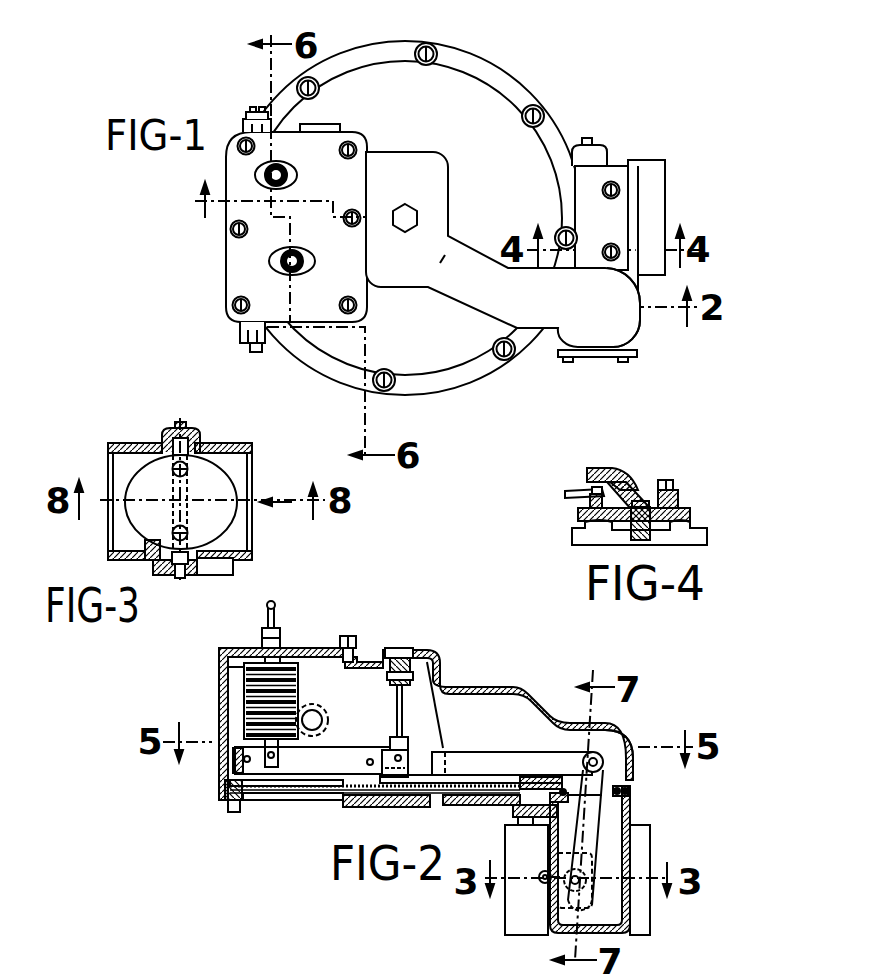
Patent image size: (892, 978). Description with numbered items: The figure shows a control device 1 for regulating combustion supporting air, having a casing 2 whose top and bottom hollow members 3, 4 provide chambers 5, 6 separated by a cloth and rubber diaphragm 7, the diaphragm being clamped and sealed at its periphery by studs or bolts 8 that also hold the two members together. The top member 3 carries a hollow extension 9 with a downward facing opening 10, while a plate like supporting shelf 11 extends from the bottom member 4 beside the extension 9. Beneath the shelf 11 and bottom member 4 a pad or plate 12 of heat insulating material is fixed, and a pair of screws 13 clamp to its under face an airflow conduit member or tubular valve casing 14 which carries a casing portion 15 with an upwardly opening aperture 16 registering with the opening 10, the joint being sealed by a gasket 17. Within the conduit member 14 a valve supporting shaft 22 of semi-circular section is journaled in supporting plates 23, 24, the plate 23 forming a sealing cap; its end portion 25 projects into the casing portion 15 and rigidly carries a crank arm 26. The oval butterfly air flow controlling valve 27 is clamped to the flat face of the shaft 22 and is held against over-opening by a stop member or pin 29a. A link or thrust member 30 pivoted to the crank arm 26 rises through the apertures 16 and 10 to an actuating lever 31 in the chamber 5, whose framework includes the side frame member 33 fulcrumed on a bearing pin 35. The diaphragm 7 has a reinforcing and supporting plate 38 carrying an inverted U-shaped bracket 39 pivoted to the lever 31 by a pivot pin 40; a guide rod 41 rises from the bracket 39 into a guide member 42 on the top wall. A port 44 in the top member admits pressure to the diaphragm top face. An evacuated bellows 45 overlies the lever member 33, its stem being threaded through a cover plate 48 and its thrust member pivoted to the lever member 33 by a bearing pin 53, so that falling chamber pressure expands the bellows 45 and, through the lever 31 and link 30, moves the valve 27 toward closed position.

In FIG. 2, the control device 1 is at (499, 688).
In FIG. 1, the casing 2 is at (267, 223).
In FIG. 2, the casing 2 is at (219, 712).
In FIG. 1, the top hollow member 3 is at (457, 382).
In FIG. 4, the top hollow member 3 is at (621, 475).
In FIG. 2, the top hollow member 3 is at (441, 686).
In FIG. 2, the bottom hollow member 4 is at (470, 800).
In FIG. 2, the chamber 5 is at (346, 729).
In FIG. 2, the chamber 6 is at (292, 797).
In FIG. 4, the diaphragm 7 is at (584, 484).
In FIG. 2, the diaphragm 7 is at (273, 796).
In FIG. 1, the studs or bolts 8 is at (546, 117).
In FIG. 2, the studs or bolts 8 is at (229, 808).
In FIG. 1, the hollow extension 9 is at (630, 327).
In FIG. 2, the hollow extension 9 is at (631, 731).
In FIG. 2, the downward facing opening 10 is at (616, 784).
In FIG. 1, the supporting shelf 11 is at (622, 223).
In FIG. 4, the supporting shelf 11 is at (679, 492).
In FIG. 1, the pad or plate of heat insulating material 12 is at (634, 190).
In FIG. 4, the pad or plate of heat insulating material 12 is at (693, 510).
In FIG. 4, the screws 13 is at (646, 497).
In FIG. 1, the airflow conduit member or tubular valve casing 14 is at (665, 220).
In FIG. 3, the airflow conduit member or tubular valve casing 14 is at (127, 443).
In FIG. 4, the airflow conduit member or tubular valve casing 14 is at (708, 537).
In FIG. 2, the airflow conduit member or tubular valve casing 14 is at (643, 842).
In FIG. 2, the casing portion 15 is at (632, 815).
In FIG. 2, the upwardly opening aperture 16 is at (608, 797).
In FIG. 2, the gasket 17 is at (630, 793).
In FIG. 3, the valve supporting shaft 22 is at (192, 444).
In FIG. 1, the supporting plate 23 is at (596, 142).
In FIG. 3, the supporting plate 23 is at (187, 425).
In FIG. 3, the supporting plate 24 is at (193, 570).
In FIG. 3, the end portion 25 is at (176, 577).
In FIG. 2, the crank arm 26 is at (567, 890).
In FIG. 3, the air flow controlling valve 27 is at (225, 488).
In FIG. 3, the stop member or pin 29a is at (150, 541).
In FIG. 2, the link or thrust member 30 is at (592, 848).
In FIG. 2, the actuating lever 31 is at (502, 758).
In FIG. 2, the side frame member 33 is at (327, 760).
In FIG. 2, the bearing pin 35 is at (236, 765).
In FIG. 2, the reinforcing and supporting plate 38 is at (495, 776).
In FIG. 2, the inverted U-shaped bracket 39 is at (406, 771).
In FIG. 2, the shaft or pivot pin 40 is at (409, 747).
In FIG. 2, the guide rod 41 is at (396, 706).
In FIG. 2, the guide member 42 is at (389, 683).
In FIG. 2, the port or aperture 44 is at (320, 711).
In FIG. 2, the expansible-contractible hollow member 45 is at (244, 695).
In FIG. 1, the cover plate 48 is at (357, 170).
In FIG. 2, the cover plate 48 is at (322, 650).
In FIG. 2, the bearing pin 53 is at (279, 760).